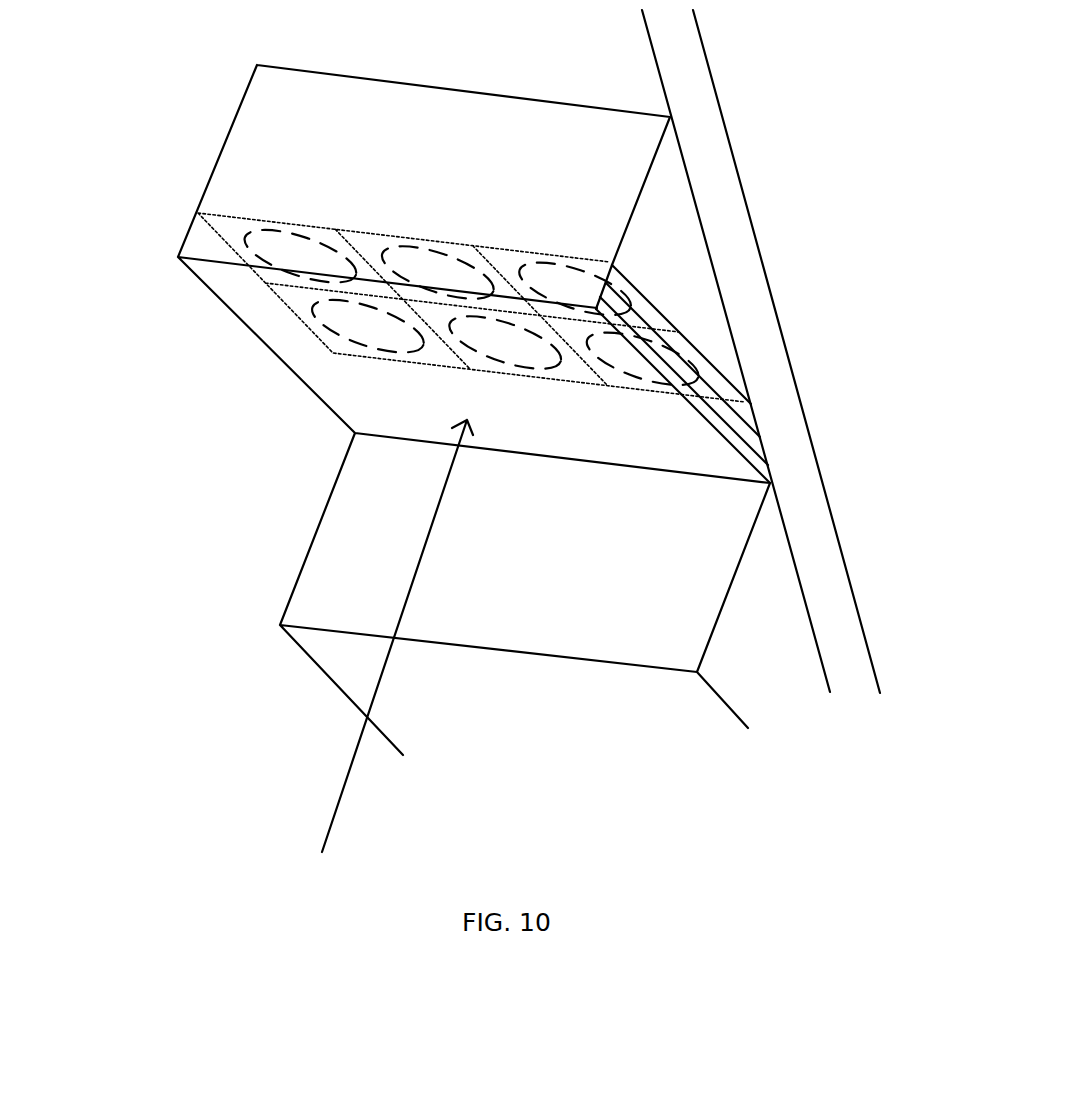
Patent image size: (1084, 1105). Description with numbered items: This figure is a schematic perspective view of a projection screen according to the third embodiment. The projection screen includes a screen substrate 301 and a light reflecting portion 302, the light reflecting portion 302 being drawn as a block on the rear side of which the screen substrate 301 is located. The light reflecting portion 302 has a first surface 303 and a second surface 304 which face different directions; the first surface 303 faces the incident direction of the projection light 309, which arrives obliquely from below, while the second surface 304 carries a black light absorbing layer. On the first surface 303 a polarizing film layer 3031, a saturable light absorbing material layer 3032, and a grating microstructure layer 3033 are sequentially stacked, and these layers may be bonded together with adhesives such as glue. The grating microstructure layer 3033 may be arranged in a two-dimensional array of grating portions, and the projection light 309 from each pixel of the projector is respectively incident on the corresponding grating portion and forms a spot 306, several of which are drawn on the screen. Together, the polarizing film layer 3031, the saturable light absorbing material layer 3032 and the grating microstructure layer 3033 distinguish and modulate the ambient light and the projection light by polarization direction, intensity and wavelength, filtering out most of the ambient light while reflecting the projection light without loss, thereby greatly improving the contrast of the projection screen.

The screen substrate 301 is at (727, 207).
The light reflecting portion 302 is at (779, 359).
The first surface 303 is at (228, 286).
The second surface 304 is at (608, 150).
The spot 306 is at (580, 290).
The projection light 309 is at (342, 798).
The polarizing film layer 3031 is at (757, 452).
The saturable light absorbing material layer 3032 is at (737, 420).
The grating microstructure layer 3033 is at (722, 380).